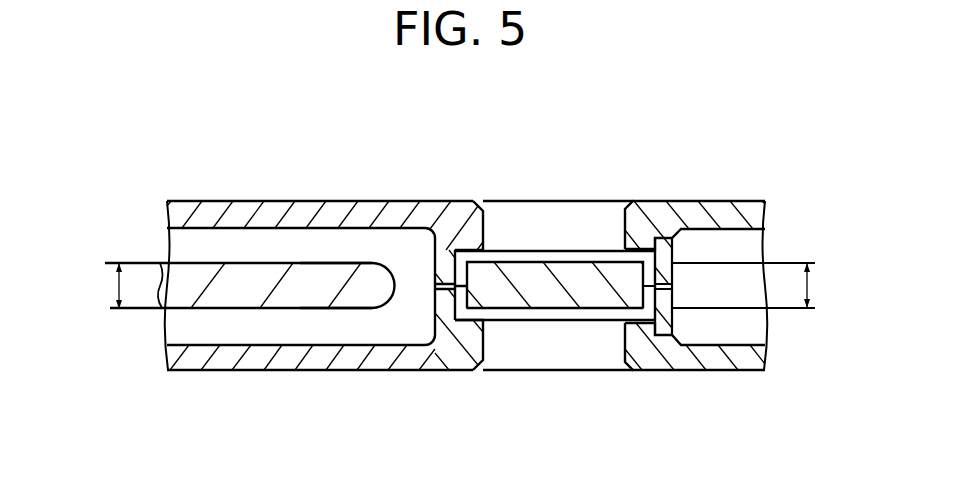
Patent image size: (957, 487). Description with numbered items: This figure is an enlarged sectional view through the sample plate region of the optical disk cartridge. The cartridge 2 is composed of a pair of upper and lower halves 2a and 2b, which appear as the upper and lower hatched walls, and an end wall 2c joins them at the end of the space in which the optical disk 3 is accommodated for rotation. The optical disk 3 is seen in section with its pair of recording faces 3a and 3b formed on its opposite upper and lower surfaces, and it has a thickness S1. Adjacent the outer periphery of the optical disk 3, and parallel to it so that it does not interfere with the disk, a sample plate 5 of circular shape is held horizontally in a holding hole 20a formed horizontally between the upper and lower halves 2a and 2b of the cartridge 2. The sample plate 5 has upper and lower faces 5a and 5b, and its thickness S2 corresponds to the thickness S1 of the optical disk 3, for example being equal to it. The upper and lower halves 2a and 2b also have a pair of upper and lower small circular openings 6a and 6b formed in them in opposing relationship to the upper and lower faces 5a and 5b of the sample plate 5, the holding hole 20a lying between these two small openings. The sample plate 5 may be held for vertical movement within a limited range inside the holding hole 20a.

The cartridge 2 is at (324, 269).
The upper half 2a is at (298, 213).
The lower half 2b is at (305, 358).
The end wall of casing 2c is at (393, 213).
The optical disk 3 is at (250, 269).
The recording face 3a is at (330, 262).
The recording face 3b is at (340, 312).
The sample plate 5 is at (545, 280).
The upper face 5a is at (515, 256).
The lower face 5b is at (520, 312).
The upper small circular opening 6a is at (624, 228).
The lower small circular opening 6b is at (624, 332).
The holding hole 20a is at (641, 256).
The thickness of the optical disk S1 is at (118, 286).
The thickness of the sample plate S2 is at (808, 286).